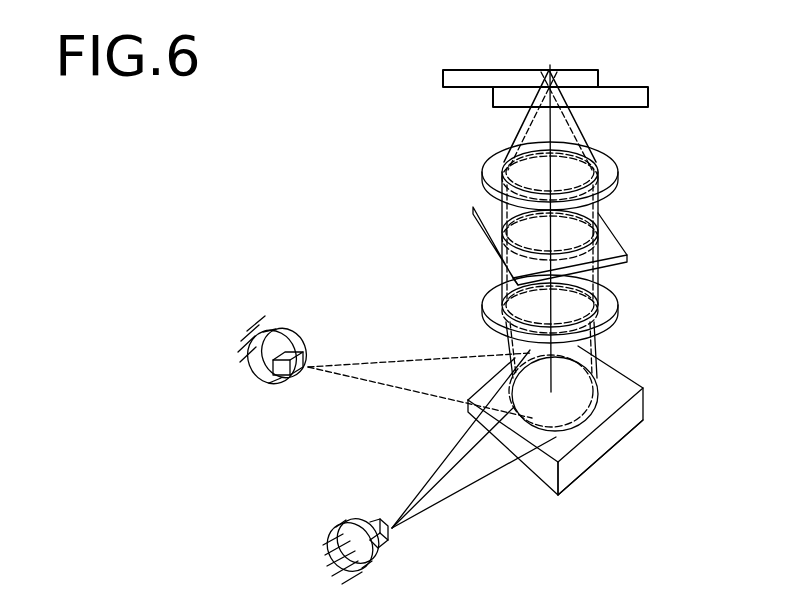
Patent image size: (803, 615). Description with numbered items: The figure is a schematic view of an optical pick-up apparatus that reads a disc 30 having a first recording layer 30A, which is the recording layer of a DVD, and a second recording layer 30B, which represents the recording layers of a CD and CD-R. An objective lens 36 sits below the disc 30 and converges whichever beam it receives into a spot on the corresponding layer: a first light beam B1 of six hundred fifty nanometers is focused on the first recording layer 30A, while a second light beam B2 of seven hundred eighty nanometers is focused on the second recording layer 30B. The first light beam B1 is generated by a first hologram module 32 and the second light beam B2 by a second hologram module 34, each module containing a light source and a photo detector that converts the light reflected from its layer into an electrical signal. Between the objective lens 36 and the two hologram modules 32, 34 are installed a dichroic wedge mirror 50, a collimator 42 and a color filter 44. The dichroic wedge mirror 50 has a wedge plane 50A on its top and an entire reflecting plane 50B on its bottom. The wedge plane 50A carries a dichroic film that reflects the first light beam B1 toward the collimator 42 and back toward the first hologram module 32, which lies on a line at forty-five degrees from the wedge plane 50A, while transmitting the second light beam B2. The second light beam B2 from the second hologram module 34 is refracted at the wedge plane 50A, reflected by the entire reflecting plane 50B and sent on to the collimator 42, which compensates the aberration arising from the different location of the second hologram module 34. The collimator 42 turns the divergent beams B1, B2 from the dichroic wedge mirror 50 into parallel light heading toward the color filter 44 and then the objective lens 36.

The disc 30 is at (478, 55).
The first recording layer 30A is at (648, 90).
The second recording layer 30B is at (598, 70).
The first hologram module 32 is at (305, 333).
The second hologram module 34 is at (353, 520).
The objective lens 36 is at (618, 160).
The collimator 42 is at (618, 305).
The color filter 44 is at (603, 258).
The dichroic wedge mirror 50 is at (643, 388).
The wedge plane 50A is at (622, 386).
The entire reflecting plane 50B is at (620, 443).
The first light beam B1 is at (423, 362).
The second light beam B2 is at (467, 485).